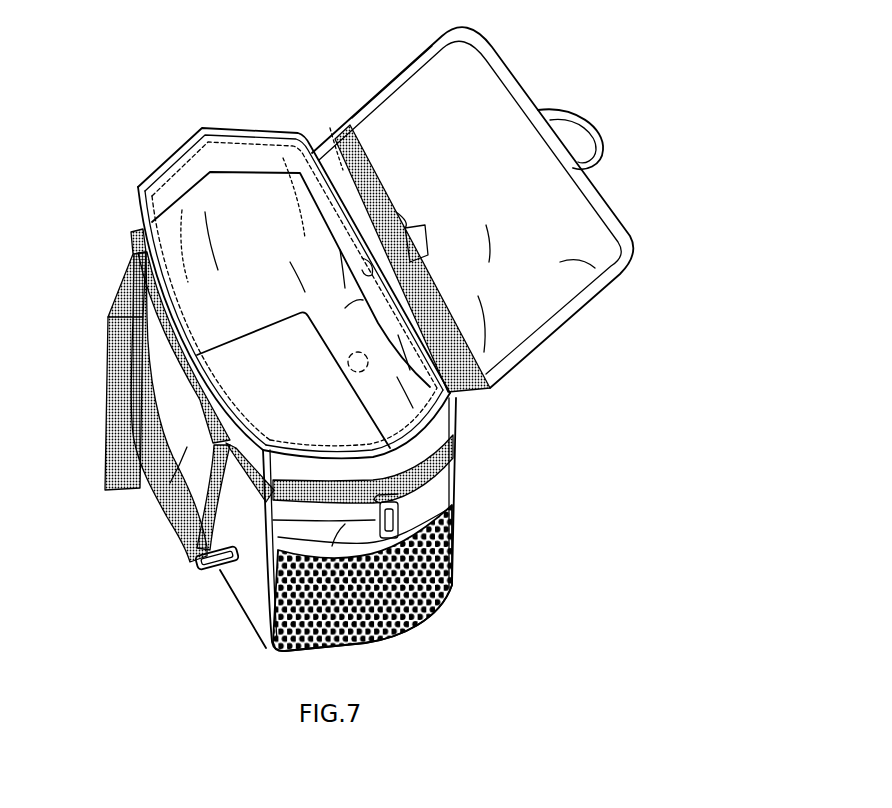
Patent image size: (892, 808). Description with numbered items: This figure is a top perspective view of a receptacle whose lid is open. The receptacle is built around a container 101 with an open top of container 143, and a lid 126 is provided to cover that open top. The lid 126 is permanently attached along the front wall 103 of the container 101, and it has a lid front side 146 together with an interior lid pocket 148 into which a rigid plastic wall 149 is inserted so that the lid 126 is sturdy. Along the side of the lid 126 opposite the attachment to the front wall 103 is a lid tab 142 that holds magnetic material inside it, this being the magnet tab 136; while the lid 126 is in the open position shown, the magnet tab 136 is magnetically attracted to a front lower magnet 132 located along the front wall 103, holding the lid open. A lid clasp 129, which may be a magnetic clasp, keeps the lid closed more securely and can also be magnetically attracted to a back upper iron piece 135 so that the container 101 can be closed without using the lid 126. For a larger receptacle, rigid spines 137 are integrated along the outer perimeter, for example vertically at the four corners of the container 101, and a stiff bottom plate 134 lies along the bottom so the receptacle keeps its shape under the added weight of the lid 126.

The container 101 is at (143, 492).
The front wall 103 is at (292, 280).
The lid 126 is at (548, 272).
The lid clasp 129 is at (180, 336).
The front lower magnet 132 is at (350, 362).
The stiff bottom plate 134 is at (285, 352).
The back upper iron piece 135 is at (362, 262).
The magnet tab 136 is at (600, 140).
The rigid spines 137 is at (263, 648).
The lid tab 142 is at (575, 122).
The open top of container 143 is at (263, 195).
The lid front side 146 is at (583, 232).
The interior lid pocket 148 is at (393, 120).
The rigid plastic wall 149 is at (420, 117).